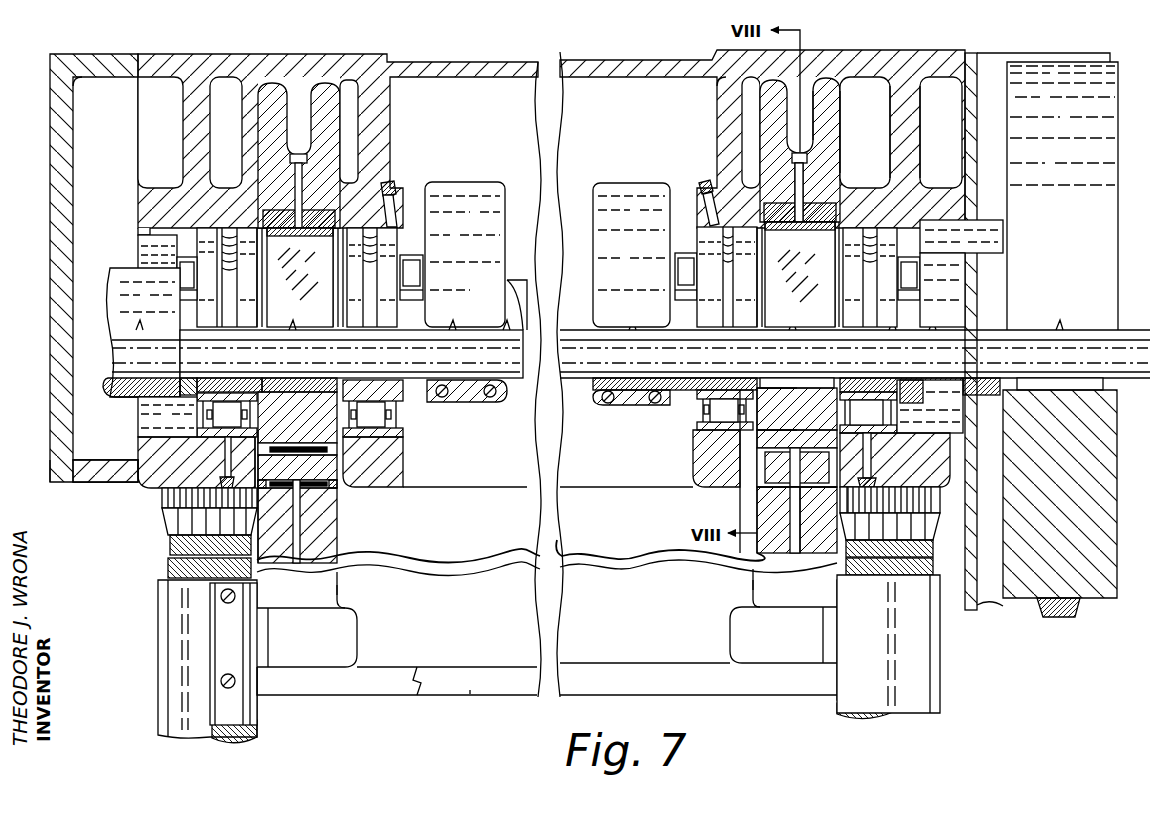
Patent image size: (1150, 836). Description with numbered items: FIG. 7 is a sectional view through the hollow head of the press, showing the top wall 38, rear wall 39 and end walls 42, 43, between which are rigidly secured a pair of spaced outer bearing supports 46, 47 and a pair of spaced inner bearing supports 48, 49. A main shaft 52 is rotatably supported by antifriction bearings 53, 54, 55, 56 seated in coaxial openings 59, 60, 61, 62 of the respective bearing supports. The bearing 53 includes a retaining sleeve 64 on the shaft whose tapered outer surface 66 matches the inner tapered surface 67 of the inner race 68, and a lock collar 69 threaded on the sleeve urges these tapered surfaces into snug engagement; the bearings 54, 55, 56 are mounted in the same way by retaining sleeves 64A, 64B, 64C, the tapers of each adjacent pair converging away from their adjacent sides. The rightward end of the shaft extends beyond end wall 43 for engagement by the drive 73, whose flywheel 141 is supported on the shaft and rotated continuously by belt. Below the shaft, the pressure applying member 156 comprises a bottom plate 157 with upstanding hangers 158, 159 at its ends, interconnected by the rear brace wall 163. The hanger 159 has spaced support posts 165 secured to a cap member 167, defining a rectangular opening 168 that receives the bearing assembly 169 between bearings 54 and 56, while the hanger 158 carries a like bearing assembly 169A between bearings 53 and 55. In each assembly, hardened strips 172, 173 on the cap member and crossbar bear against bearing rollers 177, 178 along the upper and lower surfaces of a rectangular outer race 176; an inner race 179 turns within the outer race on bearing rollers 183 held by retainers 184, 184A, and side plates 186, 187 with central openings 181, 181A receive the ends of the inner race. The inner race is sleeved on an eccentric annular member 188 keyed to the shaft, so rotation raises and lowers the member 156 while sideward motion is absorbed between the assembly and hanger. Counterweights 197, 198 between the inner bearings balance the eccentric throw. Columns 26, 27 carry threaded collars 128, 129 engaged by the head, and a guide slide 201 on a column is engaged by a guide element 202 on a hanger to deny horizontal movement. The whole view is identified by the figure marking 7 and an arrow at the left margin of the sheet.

The spindle drive assembly 7 is at (48, 465).
The column 26 is at (943, 696).
The column 27 is at (157, 697).
The top wall 38 is at (436, 60).
The rear wall 39 is at (433, 183).
The end wall 42 is at (55, 232).
The end wall 43 is at (977, 70).
The outer bearing support 46 is at (144, 212).
The outer bearing support 47 is at (931, 208).
The inner bearing support 48 is at (393, 484).
The inner bearing support 49 is at (703, 485).
The main shaft 52 is at (518, 383).
The antifriction bearing 53 is at (213, 226).
The antifriction bearing 54 is at (859, 222).
The antifriction bearing 55 is at (392, 186).
The antifriction bearing 56 is at (704, 187).
The coaxial opening 59 is at (150, 231).
The coaxial opening 60 is at (948, 240).
The coaxial opening 61 is at (371, 228).
The coaxial opening 62 is at (738, 230).
The retaining sleeve 64 is at (240, 378).
The retaining sleeve 64A is at (880, 375).
The retaining sleeve 64B is at (370, 378).
The retaining sleeve 64C is at (707, 375).
The tapered outer surface 66 is at (218, 378).
The inner tapered surface 67 is at (265, 378).
The inner race 68 is at (297, 477).
The lock collar 69 is at (167, 417).
The drive 73 is at (1052, 624).
The collar 128 is at (833, 562).
The collar 129 is at (168, 522).
The flywheel 141 is at (1060, 330).
The pressure applying member 156 is at (362, 700).
The bottom plate 157 is at (468, 688).
The hanger 158 is at (340, 590).
The hanger 159 is at (752, 574).
The rear brace wall 163 is at (398, 588).
The support post 165 is at (762, 590).
The cap member 167 is at (836, 119).
The rectangular opening 168 is at (771, 210).
The bearing assembly 169 is at (812, 210).
The bearing assembly 169A is at (303, 208).
The hardened strip 172 is at (787, 238).
The hardened strip 173 is at (772, 513).
The outer race 176 is at (759, 472).
The bearing rollers 177 is at (786, 231).
The bearing rollers 178 is at (815, 520).
The inner race 179 is at (777, 402).
The central opening 181 is at (760, 441).
The central opening 181A is at (868, 441).
The bearing rollers 183 is at (797, 409).
The retainer 184 is at (780, 423).
The retainer 184A is at (797, 467).
The side plate 186 is at (759, 489).
The side plate 187 is at (848, 500).
The annular member 188 is at (800, 380).
The counterweight 197 is at (478, 188).
The counterweight 198 is at (615, 190).
The guide slide 201 is at (222, 728).
The guide element 202 is at (233, 646).